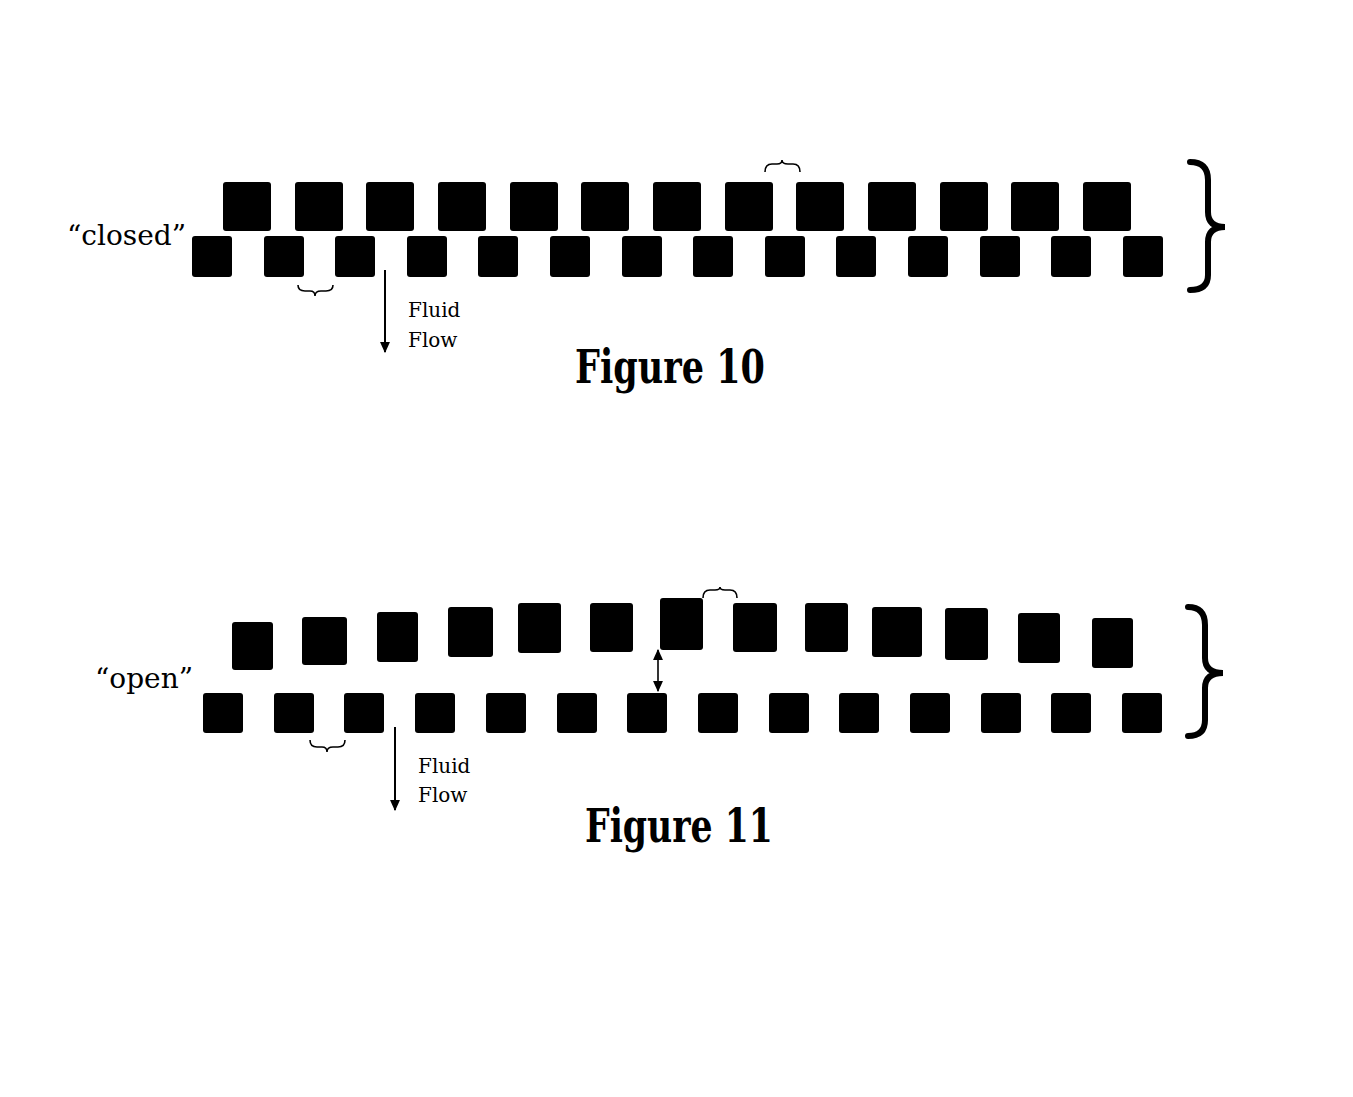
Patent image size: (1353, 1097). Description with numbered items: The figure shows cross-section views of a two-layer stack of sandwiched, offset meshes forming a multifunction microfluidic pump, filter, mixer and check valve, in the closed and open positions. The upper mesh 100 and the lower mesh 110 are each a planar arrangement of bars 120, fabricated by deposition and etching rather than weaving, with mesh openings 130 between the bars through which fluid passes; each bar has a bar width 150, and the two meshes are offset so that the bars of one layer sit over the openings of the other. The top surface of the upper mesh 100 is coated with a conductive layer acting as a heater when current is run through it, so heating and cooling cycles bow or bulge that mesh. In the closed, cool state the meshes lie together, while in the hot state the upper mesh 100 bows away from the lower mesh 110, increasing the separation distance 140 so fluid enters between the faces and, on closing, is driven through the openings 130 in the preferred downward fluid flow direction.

In FIG. 10, the first mesh layer 100 is at (727, 224).
In FIG. 11, the first mesh layer 100 is at (731, 665).
In FIG. 10, the second mesh layer 110 is at (648, 224).
In FIG. 11, the second mesh layer 110 is at (651, 665).
In FIG. 10, the mesh bars 120 is at (648, 196).
In FIG. 11, the mesh bars 120 is at (651, 640).
In FIG. 10, the mesh openings 130 is at (315, 298).
In FIG. 11, the mesh openings 130 is at (327, 757).
In FIG. 11, the separation distance 140 is at (653, 675).
In FIG. 10, the bar width 150 is at (558, 172).
In FIG. 11, the bar width 150 is at (492, 602).